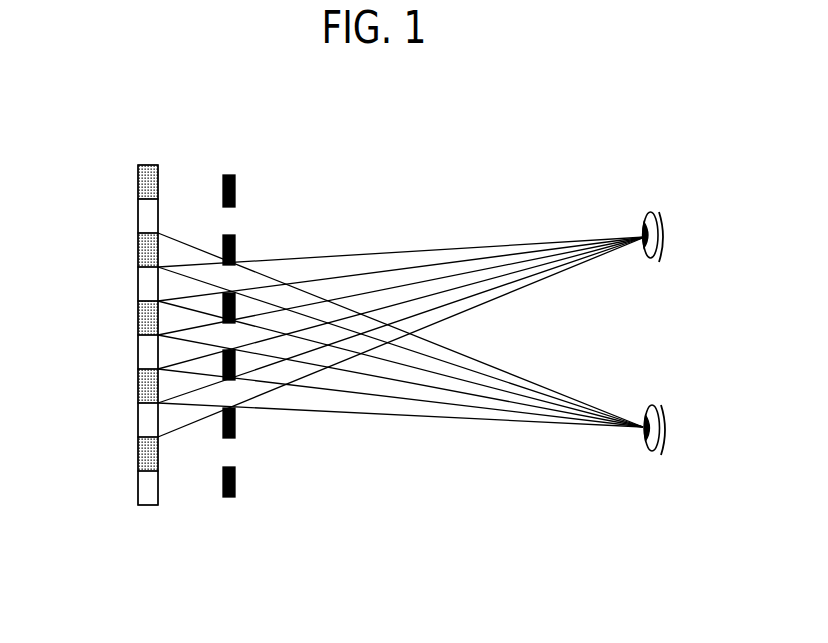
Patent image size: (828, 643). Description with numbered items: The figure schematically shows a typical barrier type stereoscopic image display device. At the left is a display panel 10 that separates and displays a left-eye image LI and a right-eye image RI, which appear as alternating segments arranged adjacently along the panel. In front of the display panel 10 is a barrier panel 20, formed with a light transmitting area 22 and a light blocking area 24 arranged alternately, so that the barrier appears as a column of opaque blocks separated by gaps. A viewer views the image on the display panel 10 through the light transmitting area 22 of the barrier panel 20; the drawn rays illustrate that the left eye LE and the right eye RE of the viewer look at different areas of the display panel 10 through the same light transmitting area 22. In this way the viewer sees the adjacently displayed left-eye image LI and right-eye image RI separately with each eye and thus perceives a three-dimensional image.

The display panel 10 is at (112, 373).
The barrier panel 20 is at (275, 378).
The light transmitting area 22 is at (233, 452).
The light blocking area 24 is at (235, 485).
The left-eye image LI is at (138, 182).
The right-eye image RI is at (138, 216).
The right eye RE is at (636, 204).
The left eye LE is at (638, 399).